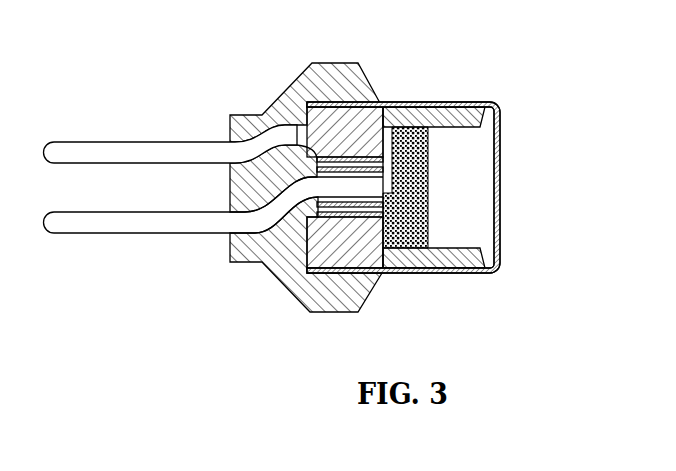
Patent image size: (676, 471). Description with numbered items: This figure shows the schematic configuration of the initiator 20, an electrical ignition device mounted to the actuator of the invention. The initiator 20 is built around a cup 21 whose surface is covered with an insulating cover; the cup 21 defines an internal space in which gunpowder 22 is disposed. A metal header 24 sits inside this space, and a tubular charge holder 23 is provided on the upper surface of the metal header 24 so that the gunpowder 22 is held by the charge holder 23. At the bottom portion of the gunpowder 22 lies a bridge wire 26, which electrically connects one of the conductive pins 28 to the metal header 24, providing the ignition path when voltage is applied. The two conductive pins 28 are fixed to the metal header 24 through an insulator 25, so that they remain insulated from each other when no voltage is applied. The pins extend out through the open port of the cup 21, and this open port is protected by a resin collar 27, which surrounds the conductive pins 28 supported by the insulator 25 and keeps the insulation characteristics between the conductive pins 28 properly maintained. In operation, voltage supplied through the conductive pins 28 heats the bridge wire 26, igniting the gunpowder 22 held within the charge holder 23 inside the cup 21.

The initiator 20 is at (314, 183).
The cup 21 is at (497, 100).
The gunpowder 22 is at (433, 163).
The charge holder 23 is at (453, 247).
The metal header 24 is at (357, 245).
The insulator 25 is at (338, 163).
The bridge wire 26 is at (383, 128).
The resin collar 27 is at (256, 111).
The conductive pins 28 is at (157, 142).